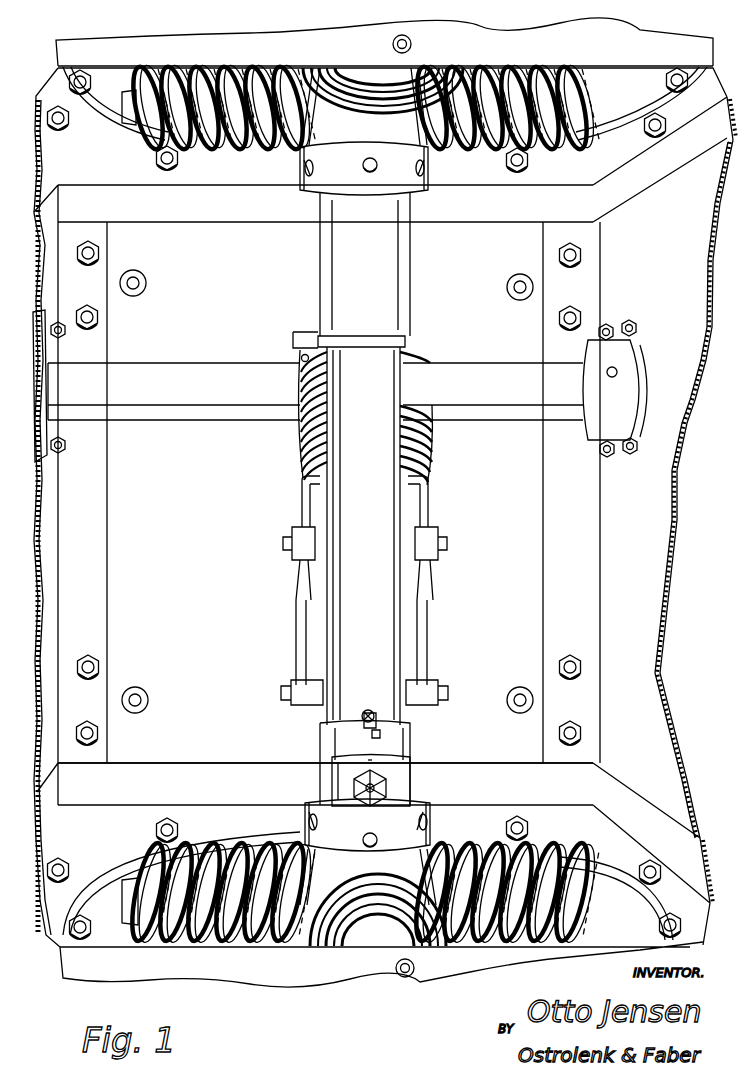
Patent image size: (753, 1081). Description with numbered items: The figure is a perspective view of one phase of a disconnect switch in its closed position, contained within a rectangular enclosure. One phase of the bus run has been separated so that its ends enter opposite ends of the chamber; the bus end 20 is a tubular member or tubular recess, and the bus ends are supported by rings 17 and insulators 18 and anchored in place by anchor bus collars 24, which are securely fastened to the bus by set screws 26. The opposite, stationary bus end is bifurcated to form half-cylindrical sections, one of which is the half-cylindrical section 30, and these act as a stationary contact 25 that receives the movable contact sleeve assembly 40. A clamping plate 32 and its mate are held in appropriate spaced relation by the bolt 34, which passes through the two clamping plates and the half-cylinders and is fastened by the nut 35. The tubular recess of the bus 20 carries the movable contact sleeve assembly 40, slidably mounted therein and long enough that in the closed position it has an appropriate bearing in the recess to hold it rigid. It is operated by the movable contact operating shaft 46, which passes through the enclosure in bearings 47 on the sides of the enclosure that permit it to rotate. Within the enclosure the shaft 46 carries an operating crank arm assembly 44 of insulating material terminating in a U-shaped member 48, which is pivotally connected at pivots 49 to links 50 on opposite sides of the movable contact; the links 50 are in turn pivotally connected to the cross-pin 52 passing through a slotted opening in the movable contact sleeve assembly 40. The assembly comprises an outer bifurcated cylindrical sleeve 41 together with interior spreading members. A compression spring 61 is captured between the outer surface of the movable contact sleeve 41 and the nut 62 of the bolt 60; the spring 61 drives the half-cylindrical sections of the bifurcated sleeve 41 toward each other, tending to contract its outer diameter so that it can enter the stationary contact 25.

The ring 17 is at (625, 112).
The insulator 18 is at (155, 145).
The bus end 20 is at (350, 261).
The anchor bus collar 24 is at (383, 136).
The stationary contact 25 is at (276, 779).
The set screw 26 is at (428, 168).
The half-cylindrical section 30 is at (327, 738).
The clamping plate 32 is at (413, 797).
The bolt 34 is at (375, 786).
The nut 35 is at (393, 787).
The movable contact sleeve assembly 40 is at (470, 580).
The outer bifurcated cylindrical sleeve 41 is at (407, 355).
The operating crank arm assembly 44 is at (275, 454).
The movable contact operating shaft 46 is at (197, 367).
The bearing 47 is at (590, 422).
The U-shaped member 48 is at (300, 500).
The pivotal connection 49 is at (283, 543).
The link 50 is at (303, 623).
The cross-pin 52 is at (281, 693).
The bolt 60 is at (412, 741).
The compression spring 61 is at (363, 713).
The nut 62 is at (370, 710).